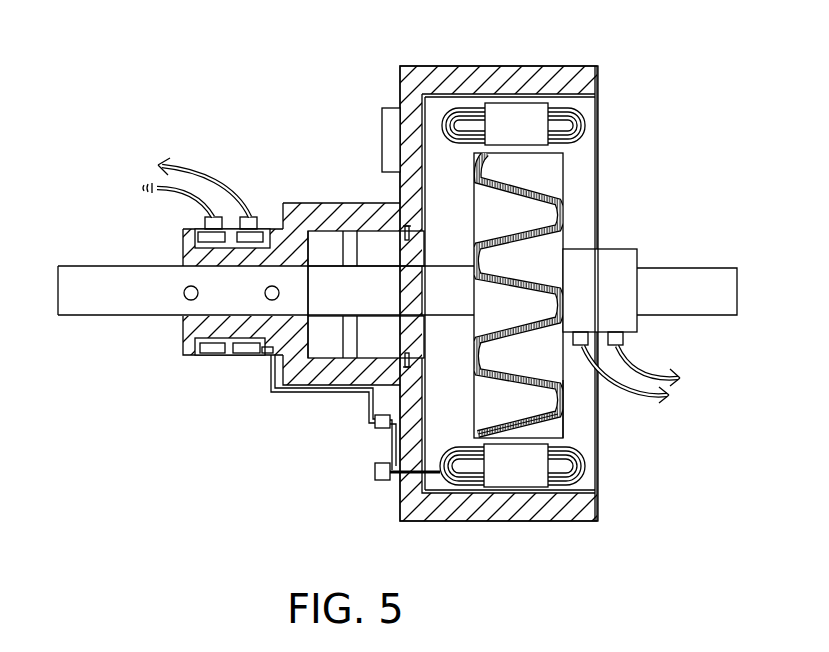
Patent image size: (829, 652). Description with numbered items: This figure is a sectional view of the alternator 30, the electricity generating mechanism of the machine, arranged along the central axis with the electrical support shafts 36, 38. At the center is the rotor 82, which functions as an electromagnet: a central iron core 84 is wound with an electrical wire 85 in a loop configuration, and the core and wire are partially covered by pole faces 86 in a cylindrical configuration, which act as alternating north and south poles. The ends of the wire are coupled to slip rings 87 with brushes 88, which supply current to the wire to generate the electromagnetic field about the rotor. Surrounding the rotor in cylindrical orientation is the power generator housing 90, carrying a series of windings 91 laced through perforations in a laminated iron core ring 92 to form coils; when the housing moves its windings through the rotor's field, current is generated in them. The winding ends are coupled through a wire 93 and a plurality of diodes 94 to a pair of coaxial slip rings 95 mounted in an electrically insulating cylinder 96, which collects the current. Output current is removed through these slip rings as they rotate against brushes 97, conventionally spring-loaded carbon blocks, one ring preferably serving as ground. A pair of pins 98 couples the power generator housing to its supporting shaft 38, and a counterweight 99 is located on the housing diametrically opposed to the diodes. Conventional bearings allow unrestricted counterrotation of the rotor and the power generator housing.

The alternator 30 is at (521, 46).
The electrical support shaft 36 is at (675, 270).
The electrical support shaft 38 is at (112, 283).
The rotor 82 is at (540, 167).
The iron core 84 is at (560, 408).
The electrical wire 85 is at (560, 433).
The pole faces 86 is at (510, 403).
The slip rings 87 is at (610, 258).
The brushes 88 is at (627, 360).
The power generator housing 90 is at (427, 75).
The windings 91 is at (587, 120).
The laminated iron core ring 92 is at (528, 118).
The wire 93 is at (392, 450).
The diodes 94 is at (377, 427).
The coaxial slip rings 95 is at (242, 350).
The electrically insulating cylinder 96 is at (210, 325).
The brushes 97 is at (203, 217).
The pins 98 is at (198, 292).
The counterweight 99 is at (390, 130).